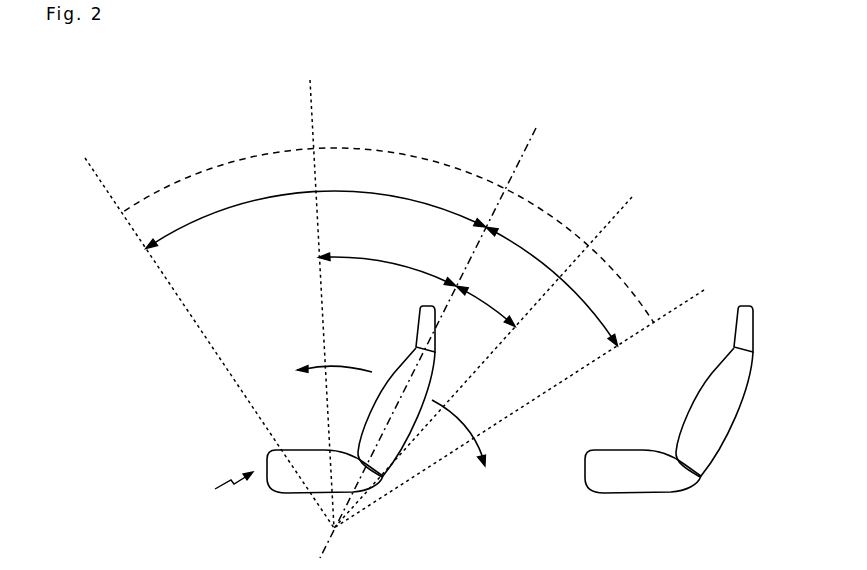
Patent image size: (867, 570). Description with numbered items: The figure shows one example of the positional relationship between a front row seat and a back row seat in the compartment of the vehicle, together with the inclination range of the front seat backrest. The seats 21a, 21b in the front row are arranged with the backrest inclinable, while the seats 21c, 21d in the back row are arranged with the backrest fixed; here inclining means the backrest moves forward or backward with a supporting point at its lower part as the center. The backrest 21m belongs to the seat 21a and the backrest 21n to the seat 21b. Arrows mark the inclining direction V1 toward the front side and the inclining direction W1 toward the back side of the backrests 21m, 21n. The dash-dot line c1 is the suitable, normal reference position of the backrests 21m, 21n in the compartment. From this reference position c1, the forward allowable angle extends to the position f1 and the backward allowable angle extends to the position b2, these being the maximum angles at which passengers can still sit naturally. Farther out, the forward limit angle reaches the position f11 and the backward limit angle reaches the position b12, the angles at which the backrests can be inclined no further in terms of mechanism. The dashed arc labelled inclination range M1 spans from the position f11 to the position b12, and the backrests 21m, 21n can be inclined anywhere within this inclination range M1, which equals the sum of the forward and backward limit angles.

The seat 21a is at (177, 485).
The seat 21b is at (177, 485).
The seat 21c is at (720, 412).
The seat 21d is at (708, 488).
The backrest 21m is at (408, 419).
The backrest 21n is at (393, 435).
The position f1 is at (318, 295).
The position f11 is at (204, 331).
The reference position c1 is at (434, 333).
The position b2 is at (491, 351).
The position b12 is at (532, 395).
The inclination range M1 is at (410, 156).
The inclining direction to the front side V1 is at (318, 374).
The inclining direction to the back side W1 is at (469, 448).